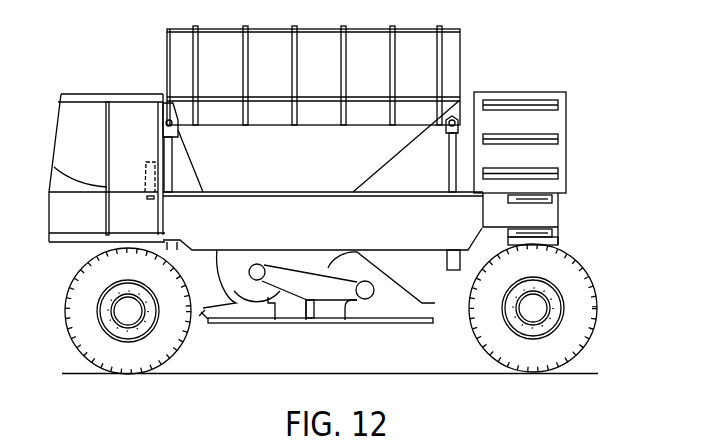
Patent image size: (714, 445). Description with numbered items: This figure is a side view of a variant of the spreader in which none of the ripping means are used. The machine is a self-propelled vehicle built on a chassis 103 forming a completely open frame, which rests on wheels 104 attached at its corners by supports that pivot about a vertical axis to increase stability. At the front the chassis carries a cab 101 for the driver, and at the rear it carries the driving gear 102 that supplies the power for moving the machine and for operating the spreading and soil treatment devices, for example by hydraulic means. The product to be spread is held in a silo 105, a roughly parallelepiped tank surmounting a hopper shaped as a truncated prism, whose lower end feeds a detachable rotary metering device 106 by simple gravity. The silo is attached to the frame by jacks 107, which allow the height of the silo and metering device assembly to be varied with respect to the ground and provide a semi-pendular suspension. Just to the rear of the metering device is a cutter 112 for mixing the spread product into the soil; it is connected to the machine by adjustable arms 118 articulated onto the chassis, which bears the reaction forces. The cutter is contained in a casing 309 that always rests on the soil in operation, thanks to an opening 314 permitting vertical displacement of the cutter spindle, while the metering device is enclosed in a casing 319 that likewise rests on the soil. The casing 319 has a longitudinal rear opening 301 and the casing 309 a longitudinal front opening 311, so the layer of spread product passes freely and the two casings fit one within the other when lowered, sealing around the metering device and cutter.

The cab 101 is at (70, 143).
The driving gear 102 is at (530, 115).
The chassis 103 is at (422, 238).
The wheels 104 is at (573, 328).
The silo 105 is at (446, 33).
The rotary metering device 106 is at (256, 276).
The jacks 107 is at (453, 267).
The cutter 112 is at (373, 291).
The arms 118 is at (328, 290).
The longitudinal rear opening 301 is at (270, 313).
The casing 309 is at (433, 312).
The longitudinal front opening 311 is at (306, 308).
The opening 314 is at (350, 305).
The casing 319 is at (206, 320).